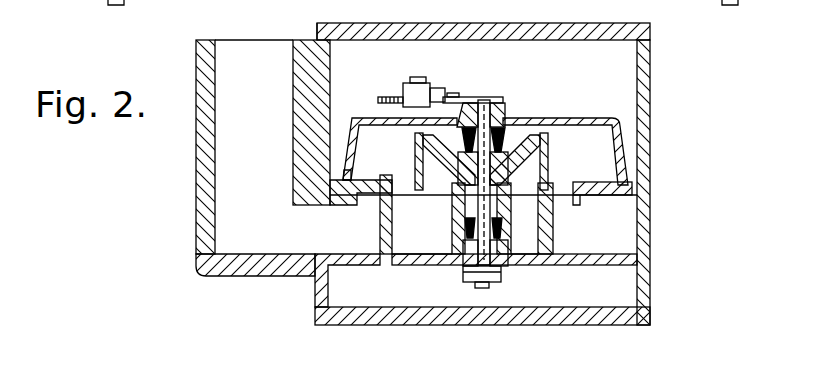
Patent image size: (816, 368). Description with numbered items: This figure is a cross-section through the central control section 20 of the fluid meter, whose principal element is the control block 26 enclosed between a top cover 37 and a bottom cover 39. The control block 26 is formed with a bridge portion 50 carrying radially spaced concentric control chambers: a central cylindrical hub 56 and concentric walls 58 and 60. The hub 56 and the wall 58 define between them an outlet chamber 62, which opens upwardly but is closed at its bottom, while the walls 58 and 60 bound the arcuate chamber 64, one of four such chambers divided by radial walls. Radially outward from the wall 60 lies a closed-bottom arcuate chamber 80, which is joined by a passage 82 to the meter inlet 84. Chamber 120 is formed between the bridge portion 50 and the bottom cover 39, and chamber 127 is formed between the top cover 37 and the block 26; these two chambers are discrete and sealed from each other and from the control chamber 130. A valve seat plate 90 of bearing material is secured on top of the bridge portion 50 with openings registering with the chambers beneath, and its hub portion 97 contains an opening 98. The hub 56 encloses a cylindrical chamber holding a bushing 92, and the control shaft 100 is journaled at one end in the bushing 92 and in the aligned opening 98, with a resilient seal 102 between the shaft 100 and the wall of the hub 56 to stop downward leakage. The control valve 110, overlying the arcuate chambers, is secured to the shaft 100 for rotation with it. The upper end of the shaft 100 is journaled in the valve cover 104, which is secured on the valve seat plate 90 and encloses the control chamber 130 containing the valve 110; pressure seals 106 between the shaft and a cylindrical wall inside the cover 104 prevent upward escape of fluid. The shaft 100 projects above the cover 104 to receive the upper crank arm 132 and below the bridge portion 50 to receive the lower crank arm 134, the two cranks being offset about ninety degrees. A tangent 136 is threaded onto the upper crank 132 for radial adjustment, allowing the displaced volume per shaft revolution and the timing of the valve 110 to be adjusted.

The central control section 20 is at (640, 322).
The control block 26 is at (653, 100).
The top cover 37 is at (562, 32).
The bottom cover 39 is at (576, 314).
The bridge portion 50 is at (350, 267).
The central cylindrical hub 56 is at (506, 266).
The concentric wall 58 is at (560, 222).
The concentric wall 60 is at (380, 226).
The outlet chamber 62 is at (530, 208).
The arcuate chamber 64 is at (405, 243).
The closed bottom arcuate chamber 80 is at (372, 178).
The passage 82 is at (314, 241).
The meter inlet 84 is at (262, 80).
The valve seat plate 90 is at (620, 205).
The bushing 92 is at (462, 256).
The hub portion 97 is at (518, 186).
The opening 98 is at (456, 186).
The control shaft 100 is at (482, 115).
The resilient seal 102 is at (510, 233).
The valve cover 104 is at (352, 114).
The pressure seals 106 is at (500, 136).
The control valve 110 is at (550, 120).
The chamber 120 is at (612, 301).
The chamber 127 is at (608, 65).
The control chamber 130 is at (600, 146).
The crank arm 132 is at (455, 97).
The crank arm 134 is at (500, 262).
The tangent 136 is at (415, 84).